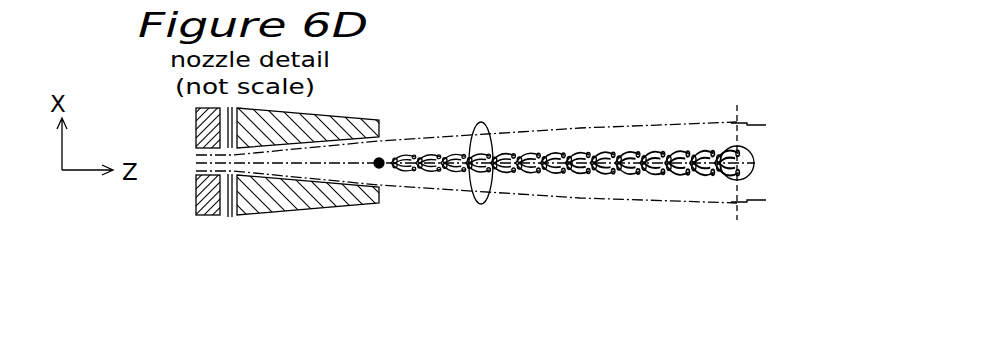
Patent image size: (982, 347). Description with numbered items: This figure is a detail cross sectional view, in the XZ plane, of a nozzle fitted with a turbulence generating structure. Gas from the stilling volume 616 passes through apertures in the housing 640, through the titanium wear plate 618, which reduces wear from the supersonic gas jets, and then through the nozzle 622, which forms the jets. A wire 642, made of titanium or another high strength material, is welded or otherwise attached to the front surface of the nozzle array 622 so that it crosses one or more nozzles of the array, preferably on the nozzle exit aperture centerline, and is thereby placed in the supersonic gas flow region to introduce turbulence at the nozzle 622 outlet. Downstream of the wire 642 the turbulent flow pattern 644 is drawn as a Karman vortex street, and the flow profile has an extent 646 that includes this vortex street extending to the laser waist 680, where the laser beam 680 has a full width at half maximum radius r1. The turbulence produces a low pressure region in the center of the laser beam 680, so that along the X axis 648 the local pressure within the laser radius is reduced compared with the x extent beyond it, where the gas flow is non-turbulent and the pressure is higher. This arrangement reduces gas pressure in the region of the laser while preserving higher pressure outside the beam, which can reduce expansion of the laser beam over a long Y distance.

The stilling volume 616 is at (176, 167).
The titanium wear plate 618 is at (232, 216).
The nozzle 622 is at (270, 208).
The housing 640 is at (210, 216).
The wire 642 is at (382, 157).
The vortex flow pattern 644 is at (415, 145).
The flow profile extent 646 is at (481, 205).
The X axis 648 is at (735, 211).
The laser beam 680 is at (754, 157).